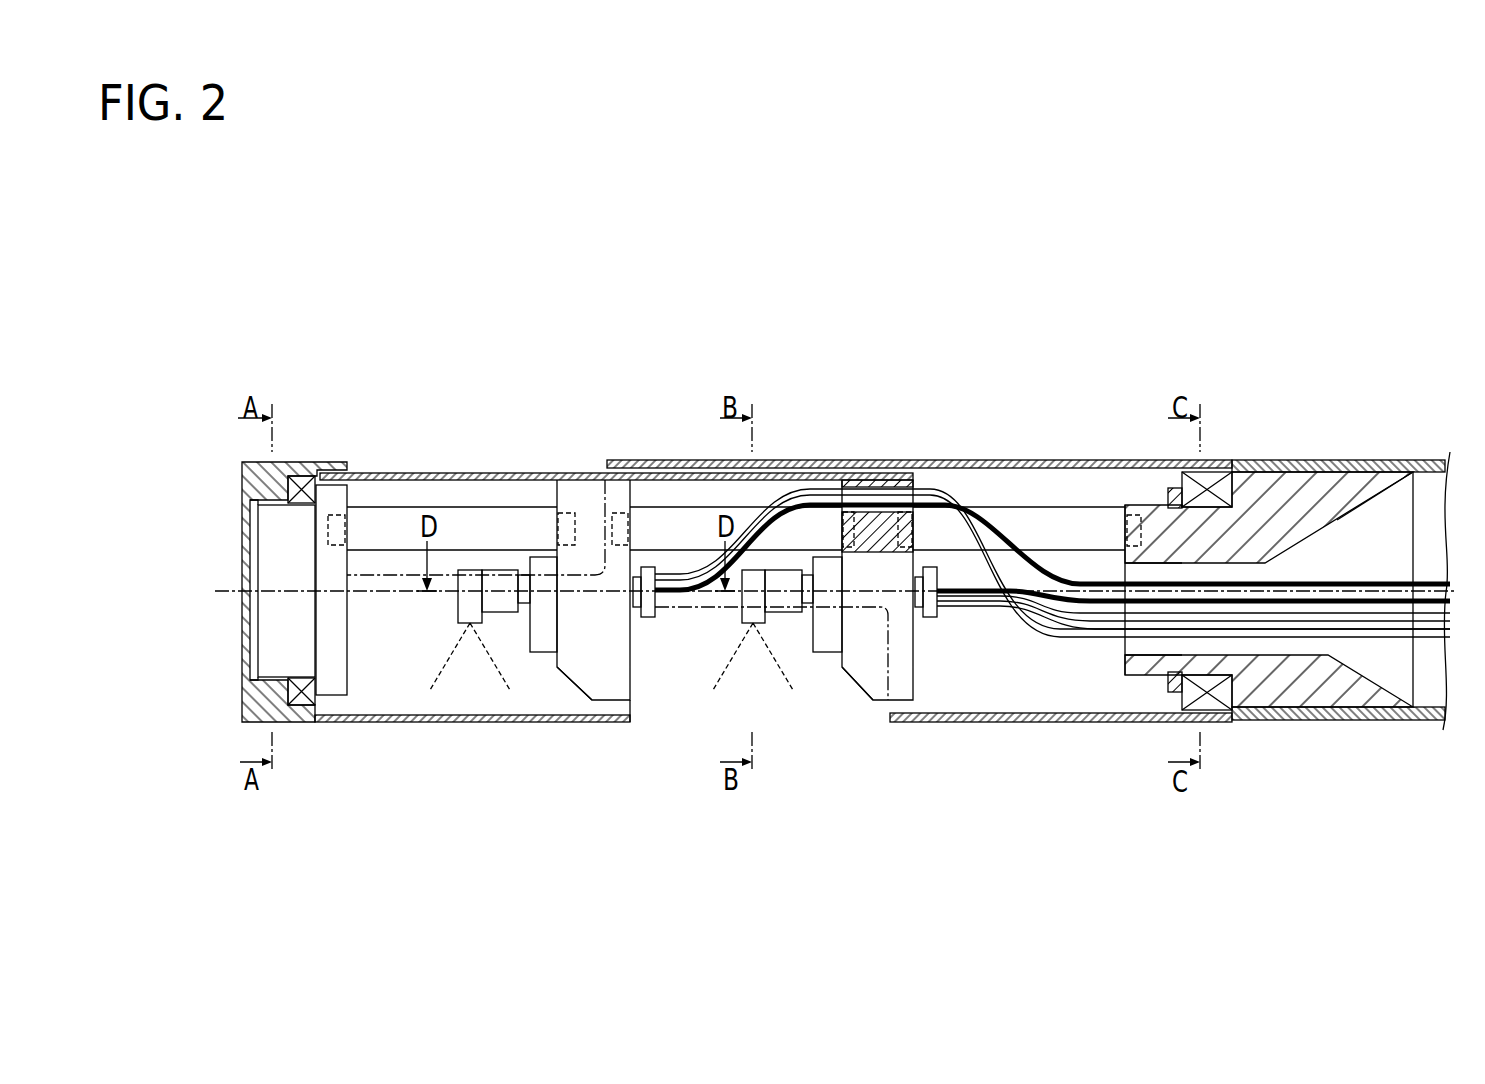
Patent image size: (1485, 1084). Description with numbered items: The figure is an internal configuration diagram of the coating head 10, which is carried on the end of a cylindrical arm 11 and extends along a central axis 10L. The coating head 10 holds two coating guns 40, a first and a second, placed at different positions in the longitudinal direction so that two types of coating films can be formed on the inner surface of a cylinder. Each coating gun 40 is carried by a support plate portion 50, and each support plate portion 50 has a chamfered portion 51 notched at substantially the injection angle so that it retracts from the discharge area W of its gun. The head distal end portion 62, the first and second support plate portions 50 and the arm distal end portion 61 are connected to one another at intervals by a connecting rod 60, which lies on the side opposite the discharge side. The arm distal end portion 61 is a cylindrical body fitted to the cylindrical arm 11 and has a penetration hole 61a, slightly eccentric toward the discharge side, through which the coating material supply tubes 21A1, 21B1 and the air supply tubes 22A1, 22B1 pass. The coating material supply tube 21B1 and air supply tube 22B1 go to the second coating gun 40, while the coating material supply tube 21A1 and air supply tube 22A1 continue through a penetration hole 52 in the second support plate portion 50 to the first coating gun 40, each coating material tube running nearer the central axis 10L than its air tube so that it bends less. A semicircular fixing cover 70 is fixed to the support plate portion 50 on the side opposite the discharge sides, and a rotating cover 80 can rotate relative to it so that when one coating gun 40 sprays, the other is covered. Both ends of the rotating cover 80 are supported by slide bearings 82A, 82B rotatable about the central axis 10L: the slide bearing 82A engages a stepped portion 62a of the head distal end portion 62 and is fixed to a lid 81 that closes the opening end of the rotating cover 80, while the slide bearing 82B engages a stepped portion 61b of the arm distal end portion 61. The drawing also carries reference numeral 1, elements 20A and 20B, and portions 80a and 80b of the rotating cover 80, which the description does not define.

The rotary connector device 1 is at (229, 330).
The coating head 10 is at (620, 362).
The central axis 10L is at (232, 588).
The cylindrical arm 11 is at (1360, 464).
The first cable 20A is at (667, 560).
The second cable 20B is at (956, 622).
The coating material supply tube 21A1 is at (1080, 581).
The coating material supply tube 21B1 is at (1100, 598).
The air supply tube 22A1 is at (1077, 624).
The air supply tube 22B1 is at (1097, 640).
The coating gun 40 is at (458, 603).
The support plate portion 50 is at (585, 480).
The chamfered portion 51 is at (572, 700).
The penetration hole 52 is at (898, 484).
The connecting rod 60 is at (392, 507).
The arm distal end portion 61 is at (1288, 500).
The penetration hole 61a is at (1180, 564).
The stepped portion 61b is at (1180, 496).
The head distal end portion 62 is at (270, 527).
The stepped portion 62a is at (294, 474).
The fixing cover 70 is at (470, 473).
The rotating cover 80 is at (784, 460).
The inner tube 80a is at (352, 473).
The tube end 80b is at (630, 722).
The lid 81 is at (243, 492).
The slide bearing 82A is at (305, 476).
The slide bearing 82B is at (1212, 486).
The discharge area W is at (505, 666).